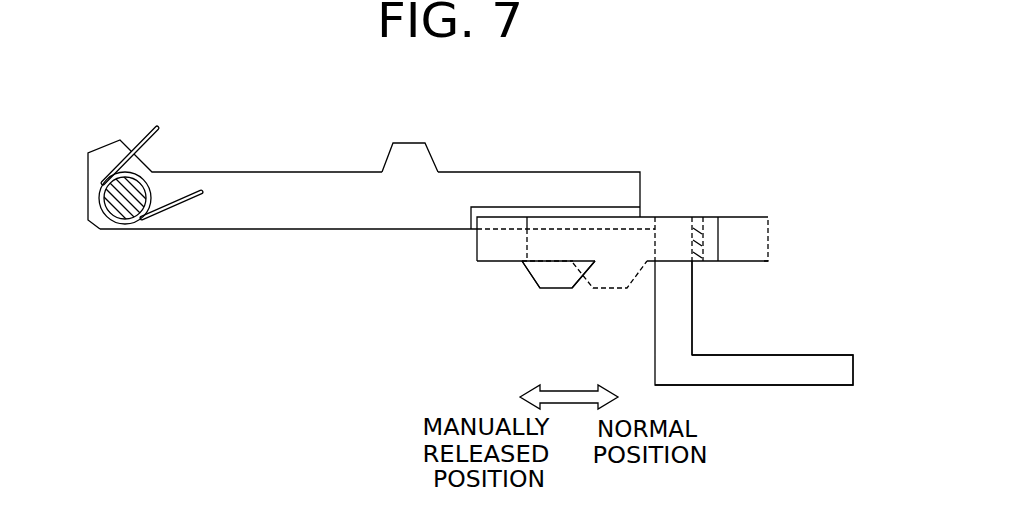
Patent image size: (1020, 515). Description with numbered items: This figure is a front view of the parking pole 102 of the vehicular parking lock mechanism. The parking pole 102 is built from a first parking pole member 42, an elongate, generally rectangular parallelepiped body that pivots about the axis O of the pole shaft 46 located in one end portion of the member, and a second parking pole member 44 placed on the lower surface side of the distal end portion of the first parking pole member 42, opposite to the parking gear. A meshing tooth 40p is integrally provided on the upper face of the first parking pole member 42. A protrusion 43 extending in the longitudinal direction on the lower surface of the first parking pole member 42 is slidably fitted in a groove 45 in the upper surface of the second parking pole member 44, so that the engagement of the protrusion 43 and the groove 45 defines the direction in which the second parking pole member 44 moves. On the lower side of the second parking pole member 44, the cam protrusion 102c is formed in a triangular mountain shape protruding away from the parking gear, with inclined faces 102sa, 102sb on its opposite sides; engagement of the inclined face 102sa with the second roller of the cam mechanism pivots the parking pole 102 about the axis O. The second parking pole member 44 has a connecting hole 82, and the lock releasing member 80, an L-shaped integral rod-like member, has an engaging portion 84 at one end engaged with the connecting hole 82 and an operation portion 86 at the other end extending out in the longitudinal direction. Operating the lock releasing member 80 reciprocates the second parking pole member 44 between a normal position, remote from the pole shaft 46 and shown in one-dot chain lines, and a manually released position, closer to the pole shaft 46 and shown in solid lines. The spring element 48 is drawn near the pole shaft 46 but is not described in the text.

The first parking pole member 42 is at (330, 212).
The meshing tooth 40p is at (405, 158).
The protrusion 43 is at (493, 210).
The second parking pole member 44 is at (614, 240).
The groove 45 is at (562, 230).
The pole shaft 46 is at (146, 223).
The spring arm 48 is at (122, 152).
The axis O is at (100, 229).
The parking pole 102 is at (701, 137).
The cam protrusion 102c is at (552, 268).
The inclined face 102sa is at (530, 275).
The inclined face 102sb is at (575, 267).
The connecting hole 82 is at (690, 228).
The engaging portion 84 is at (678, 309).
The operation portion 86 is at (818, 375).
The lock releasing member 80 is at (754, 374).